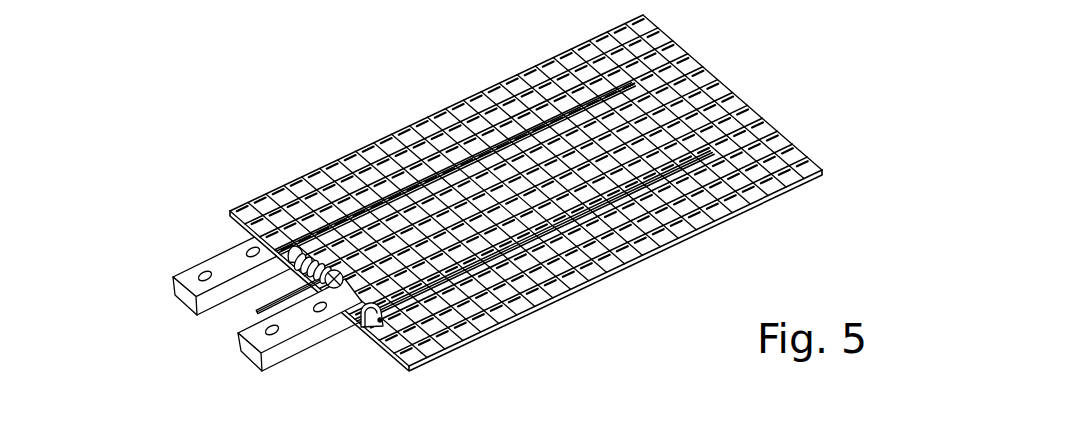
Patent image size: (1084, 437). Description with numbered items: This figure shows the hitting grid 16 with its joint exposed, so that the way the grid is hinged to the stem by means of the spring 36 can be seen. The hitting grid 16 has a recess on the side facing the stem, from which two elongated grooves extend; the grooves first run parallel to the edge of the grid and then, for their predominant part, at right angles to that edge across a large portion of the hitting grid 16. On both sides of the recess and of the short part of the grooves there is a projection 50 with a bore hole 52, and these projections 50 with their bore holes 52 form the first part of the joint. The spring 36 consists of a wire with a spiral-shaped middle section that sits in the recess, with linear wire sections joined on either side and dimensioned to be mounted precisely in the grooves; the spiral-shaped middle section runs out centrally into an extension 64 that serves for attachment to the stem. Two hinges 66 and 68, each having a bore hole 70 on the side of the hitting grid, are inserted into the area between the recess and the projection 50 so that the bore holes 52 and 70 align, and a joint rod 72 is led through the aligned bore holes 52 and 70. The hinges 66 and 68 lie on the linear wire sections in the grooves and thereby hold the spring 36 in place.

The hitting grid 16 is at (705, 229).
The spring 36 is at (310, 258).
The projection 50 is at (364, 310).
The bore hole 52 is at (378, 322).
The extension 64 is at (257, 312).
The hinge 66 is at (258, 366).
The hinge 68 is at (218, 257).
The bore hole 70 is at (295, 255).
The joint rod 72 is at (342, 288).